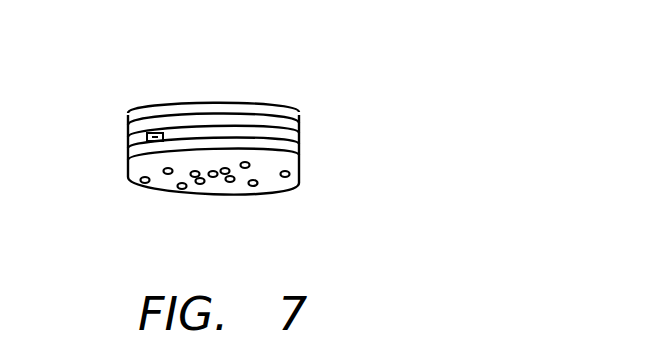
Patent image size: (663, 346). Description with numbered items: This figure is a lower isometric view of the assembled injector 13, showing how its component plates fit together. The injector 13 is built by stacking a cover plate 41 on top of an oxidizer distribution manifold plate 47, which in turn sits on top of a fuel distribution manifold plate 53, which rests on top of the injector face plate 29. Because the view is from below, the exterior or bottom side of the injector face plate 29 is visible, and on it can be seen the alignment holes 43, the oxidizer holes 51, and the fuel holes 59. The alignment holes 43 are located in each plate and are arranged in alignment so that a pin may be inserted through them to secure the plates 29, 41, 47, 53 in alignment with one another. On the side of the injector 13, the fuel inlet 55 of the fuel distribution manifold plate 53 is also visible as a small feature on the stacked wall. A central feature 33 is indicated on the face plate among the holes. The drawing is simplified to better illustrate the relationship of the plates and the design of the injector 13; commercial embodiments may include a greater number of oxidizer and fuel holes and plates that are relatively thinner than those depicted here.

The injector 13 is at (258, 80).
The cover plate 41 is at (300, 118).
The oxidizer distribution manifold plate 47 is at (300, 134).
The fuel distribution manifold plate 53 is at (300, 147).
The injector face plate 29 is at (302, 165).
The alignment holes 43 is at (130, 177).
The fuel inlet 55 is at (131, 128).
The central aperture 33 is at (213, 172).
The fuel holes 59 is at (182, 189).
The oxidizer holes 51 is at (231, 182).